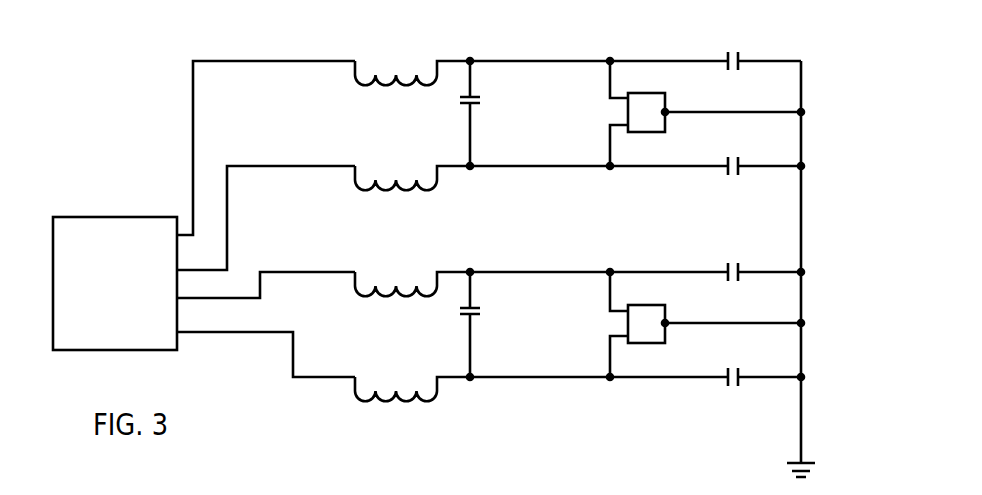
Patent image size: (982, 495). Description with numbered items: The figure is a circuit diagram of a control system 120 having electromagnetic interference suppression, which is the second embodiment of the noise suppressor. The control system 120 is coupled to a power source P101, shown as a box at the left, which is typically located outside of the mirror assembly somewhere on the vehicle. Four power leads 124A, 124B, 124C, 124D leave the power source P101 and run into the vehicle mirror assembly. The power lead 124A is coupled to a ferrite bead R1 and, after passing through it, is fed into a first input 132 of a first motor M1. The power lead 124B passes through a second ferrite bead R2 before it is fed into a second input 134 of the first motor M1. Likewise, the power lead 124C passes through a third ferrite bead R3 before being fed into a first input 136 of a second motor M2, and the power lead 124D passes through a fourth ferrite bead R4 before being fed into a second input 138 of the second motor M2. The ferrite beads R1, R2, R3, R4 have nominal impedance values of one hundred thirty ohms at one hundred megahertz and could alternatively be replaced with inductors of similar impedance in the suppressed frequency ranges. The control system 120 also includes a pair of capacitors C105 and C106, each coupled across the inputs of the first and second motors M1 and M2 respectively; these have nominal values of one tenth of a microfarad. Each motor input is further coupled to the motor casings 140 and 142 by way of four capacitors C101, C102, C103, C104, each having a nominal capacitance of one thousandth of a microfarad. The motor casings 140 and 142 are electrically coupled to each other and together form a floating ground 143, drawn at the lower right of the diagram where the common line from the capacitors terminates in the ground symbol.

The control system 120 is at (166, 128).
The power lead 124A is at (263, 60).
The power lead 124B is at (313, 166).
The power lead 124C is at (323, 272).
The power lead 124D is at (318, 378).
The power source P101 is at (115, 267).
The ferrite bead R1 is at (482, 56).
The second ferrite bead R2 is at (482, 162).
The third ferrite bead R3 is at (482, 268).
The fourth ferrite bead R4 is at (482, 373).
The capacitor C105 is at (495, 113).
The capacitor C106 is at (496, 324).
The capacitor C101 is at (707, 151).
The capacitor C102 is at (705, 46).
The capacitor C103 is at (707, 362).
The capacitor C104 is at (707, 257).
The first motor M1 is at (646, 112).
The second motor M2 is at (646, 324).
The first input 132 is at (607, 78).
The second input 134 is at (607, 127).
The first input 136 is at (607, 290).
The second input 138 is at (607, 338).
The motor casing 140 is at (669, 108).
The motor casing 142 is at (669, 320).
The floating ground 143 is at (799, 462).